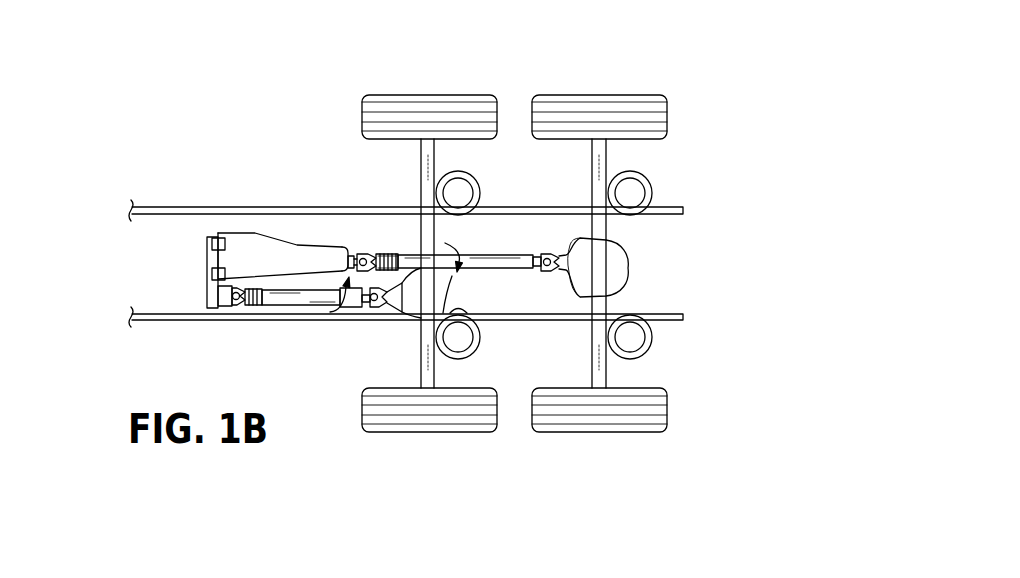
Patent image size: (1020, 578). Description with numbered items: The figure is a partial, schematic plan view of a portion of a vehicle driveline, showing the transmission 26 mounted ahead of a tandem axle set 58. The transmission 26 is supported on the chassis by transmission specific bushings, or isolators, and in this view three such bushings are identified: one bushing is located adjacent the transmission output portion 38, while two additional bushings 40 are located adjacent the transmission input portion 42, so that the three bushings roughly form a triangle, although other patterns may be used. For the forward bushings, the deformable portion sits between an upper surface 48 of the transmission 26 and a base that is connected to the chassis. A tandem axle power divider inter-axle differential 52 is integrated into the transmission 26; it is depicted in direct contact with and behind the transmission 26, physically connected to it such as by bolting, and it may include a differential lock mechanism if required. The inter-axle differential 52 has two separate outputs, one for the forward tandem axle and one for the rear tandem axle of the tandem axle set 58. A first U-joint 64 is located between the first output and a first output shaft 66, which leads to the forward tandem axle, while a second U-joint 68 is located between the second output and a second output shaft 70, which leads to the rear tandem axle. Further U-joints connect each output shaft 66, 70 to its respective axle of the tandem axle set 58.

The transmission 26 is at (195, 298).
The transmission output portion 38 is at (292, 248).
The bushings 40 is at (209, 274).
The transmission input portion 42 is at (204, 225).
The upper surface 48 is at (243, 240).
The tandem axle power divider inter-axle differential 52 is at (317, 236).
The tandem axle set 58 is at (520, 203).
The first U-joint 64 is at (232, 308).
The first output shaft 66 is at (297, 307).
The second U-joint 68 is at (365, 252).
The second output shaft 70 is at (479, 252).